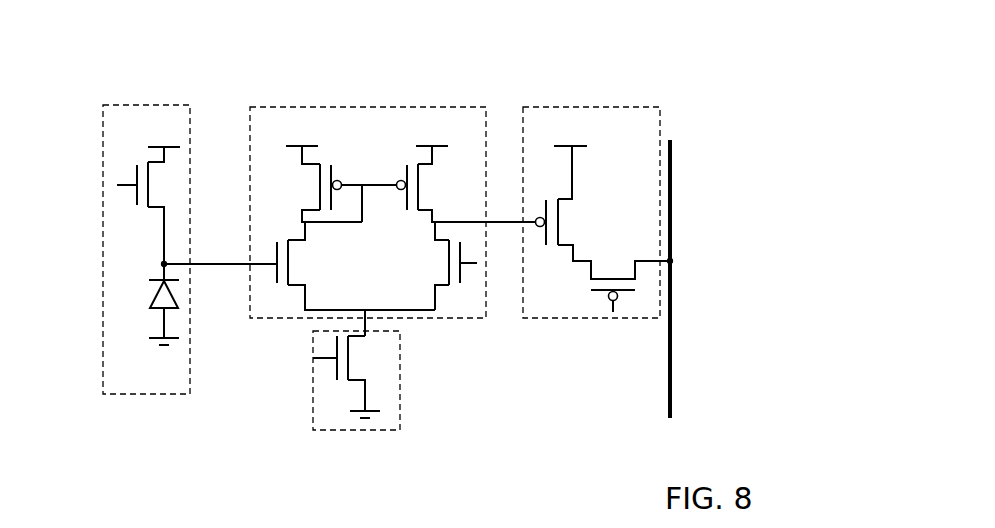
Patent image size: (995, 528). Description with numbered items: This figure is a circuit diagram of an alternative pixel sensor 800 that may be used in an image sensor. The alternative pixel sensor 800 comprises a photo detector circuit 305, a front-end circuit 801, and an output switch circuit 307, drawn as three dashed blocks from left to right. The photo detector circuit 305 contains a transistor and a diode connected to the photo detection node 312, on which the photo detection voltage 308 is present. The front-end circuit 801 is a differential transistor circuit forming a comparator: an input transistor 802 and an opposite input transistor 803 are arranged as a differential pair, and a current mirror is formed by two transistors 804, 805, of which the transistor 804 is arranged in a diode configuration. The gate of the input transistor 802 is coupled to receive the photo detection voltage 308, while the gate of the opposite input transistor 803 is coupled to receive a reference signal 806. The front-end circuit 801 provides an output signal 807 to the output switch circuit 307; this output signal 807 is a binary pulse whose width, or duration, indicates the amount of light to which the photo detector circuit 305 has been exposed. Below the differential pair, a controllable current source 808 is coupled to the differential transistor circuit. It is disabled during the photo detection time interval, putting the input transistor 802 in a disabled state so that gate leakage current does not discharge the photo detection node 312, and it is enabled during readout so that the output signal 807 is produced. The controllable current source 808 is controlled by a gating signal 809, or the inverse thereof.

The alternative pixel sensor 800 is at (68, 28).
The photo detector circuit 305 is at (146, 108).
The photo detection voltage 308 is at (220, 252).
The photo detection node 312 is at (162, 262).
The front-end circuit 801 is at (382, 108).
The input transistor 802 is at (290, 262).
The opposite input transistor 803 is at (447, 262).
The current mirror transistor in diode configuration 804 is at (318, 204).
The current mirror transistor 805 is at (418, 200).
The reference signal 806 is at (485, 254).
The output signal 807 is at (484, 208).
The output switch circuit 307 is at (582, 108).
The controllable current source 808 is at (405, 378).
The gating signal 809 is at (329, 377).